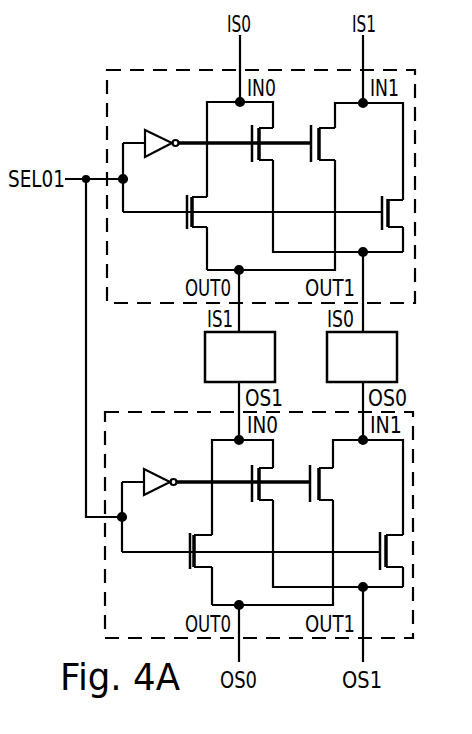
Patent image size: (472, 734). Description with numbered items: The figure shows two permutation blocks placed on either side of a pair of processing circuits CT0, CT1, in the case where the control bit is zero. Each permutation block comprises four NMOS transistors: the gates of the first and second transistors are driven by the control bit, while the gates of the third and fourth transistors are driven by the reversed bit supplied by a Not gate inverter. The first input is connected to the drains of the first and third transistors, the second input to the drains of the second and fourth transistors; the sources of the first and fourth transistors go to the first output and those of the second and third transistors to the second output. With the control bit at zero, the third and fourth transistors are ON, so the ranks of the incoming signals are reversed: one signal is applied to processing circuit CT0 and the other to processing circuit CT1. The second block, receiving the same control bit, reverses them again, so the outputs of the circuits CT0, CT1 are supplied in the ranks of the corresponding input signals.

The processing circuit CT0 is at (240, 357).
The processing circuit CT1 is at (362, 357).